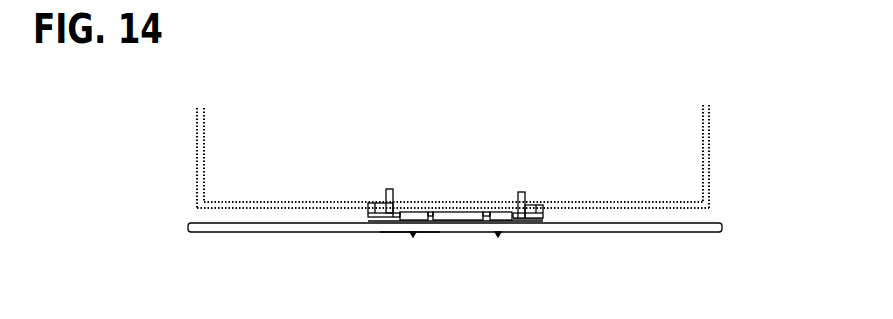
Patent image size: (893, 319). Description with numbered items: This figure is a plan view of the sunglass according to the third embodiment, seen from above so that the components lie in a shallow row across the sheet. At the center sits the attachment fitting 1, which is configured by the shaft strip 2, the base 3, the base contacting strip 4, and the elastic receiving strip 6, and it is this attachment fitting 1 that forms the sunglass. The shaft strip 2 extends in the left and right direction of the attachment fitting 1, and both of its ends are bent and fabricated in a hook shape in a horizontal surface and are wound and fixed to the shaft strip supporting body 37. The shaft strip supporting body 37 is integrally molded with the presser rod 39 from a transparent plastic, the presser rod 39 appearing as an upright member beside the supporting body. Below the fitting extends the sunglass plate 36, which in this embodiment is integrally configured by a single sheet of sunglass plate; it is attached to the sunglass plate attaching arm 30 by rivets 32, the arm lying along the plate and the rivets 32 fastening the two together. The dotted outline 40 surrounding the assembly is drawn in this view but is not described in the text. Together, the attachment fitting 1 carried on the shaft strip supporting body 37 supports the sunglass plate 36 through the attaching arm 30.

The attachment fitting 1 is at (474, 149).
The shaft strip 2 is at (515, 218).
The base 3 is at (441, 212).
The base contacting strip 4 is at (497, 212).
The elastic receiving strip 6 is at (409, 212).
The sunglass plate attaching arm 30 is at (457, 222).
The rivets 32 is at (413, 235).
The sunglass plate 36 is at (718, 233).
The shaft strip supporting body 37 is at (533, 207).
The presser rod 39 is at (522, 192).
The case 40 is at (622, 205).